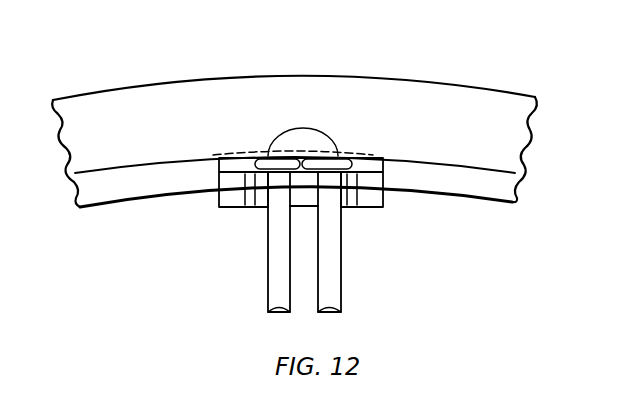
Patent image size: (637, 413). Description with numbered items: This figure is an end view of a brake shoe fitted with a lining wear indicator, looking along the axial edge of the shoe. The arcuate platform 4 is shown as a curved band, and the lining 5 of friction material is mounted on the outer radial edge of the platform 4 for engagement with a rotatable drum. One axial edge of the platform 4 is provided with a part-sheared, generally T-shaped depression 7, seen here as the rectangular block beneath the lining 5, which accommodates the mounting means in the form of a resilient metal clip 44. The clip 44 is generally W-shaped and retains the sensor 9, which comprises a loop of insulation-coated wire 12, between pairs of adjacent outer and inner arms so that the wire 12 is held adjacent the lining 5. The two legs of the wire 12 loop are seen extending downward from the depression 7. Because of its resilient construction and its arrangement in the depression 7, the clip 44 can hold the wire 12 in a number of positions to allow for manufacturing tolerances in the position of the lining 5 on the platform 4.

The lining of friction material 5 is at (400, 90).
The platform 4 is at (462, 188).
The depression 7 is at (384, 170).
The resilient metal clip 44 is at (338, 162).
The sensor 9 is at (267, 238).
The insulation-coated wire 12 is at (340, 263).